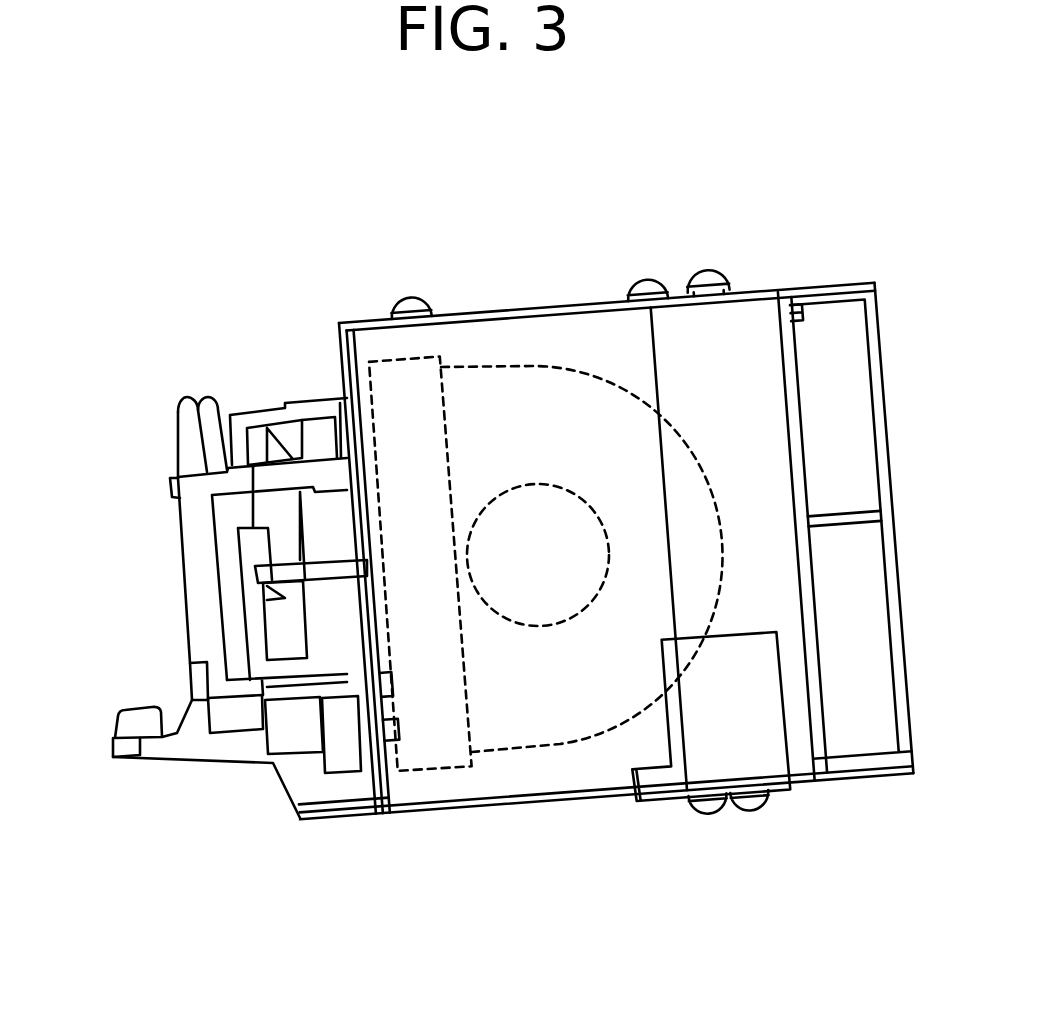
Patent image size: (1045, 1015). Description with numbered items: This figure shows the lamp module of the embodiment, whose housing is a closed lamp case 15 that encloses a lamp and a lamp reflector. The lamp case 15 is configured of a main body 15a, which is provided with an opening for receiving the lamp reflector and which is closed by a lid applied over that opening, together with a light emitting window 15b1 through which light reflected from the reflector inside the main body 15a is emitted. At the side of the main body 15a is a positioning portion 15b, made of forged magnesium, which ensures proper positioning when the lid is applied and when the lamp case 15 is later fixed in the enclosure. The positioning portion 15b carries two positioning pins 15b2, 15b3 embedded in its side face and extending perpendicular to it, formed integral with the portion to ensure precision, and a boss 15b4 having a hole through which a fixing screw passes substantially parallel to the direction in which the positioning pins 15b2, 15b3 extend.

The lamp case 15 is at (863, 889).
The main body 15a is at (540, 307).
The positioning portion 15b is at (290, 272).
The light emitting window 15b1 is at (180, 557).
The positioning pin 15b2 is at (189, 394).
The positioning pin 15b3 is at (210, 394).
The boss 15b4 is at (135, 712).